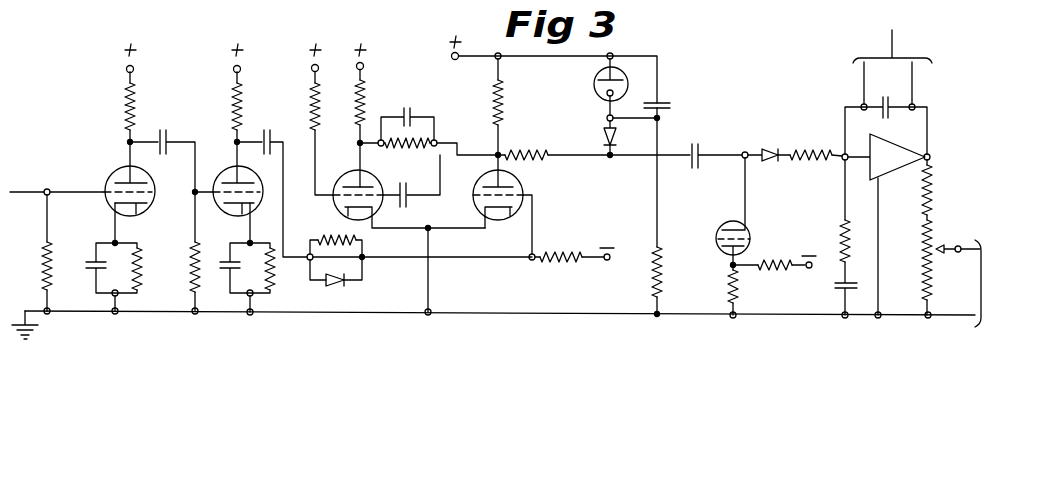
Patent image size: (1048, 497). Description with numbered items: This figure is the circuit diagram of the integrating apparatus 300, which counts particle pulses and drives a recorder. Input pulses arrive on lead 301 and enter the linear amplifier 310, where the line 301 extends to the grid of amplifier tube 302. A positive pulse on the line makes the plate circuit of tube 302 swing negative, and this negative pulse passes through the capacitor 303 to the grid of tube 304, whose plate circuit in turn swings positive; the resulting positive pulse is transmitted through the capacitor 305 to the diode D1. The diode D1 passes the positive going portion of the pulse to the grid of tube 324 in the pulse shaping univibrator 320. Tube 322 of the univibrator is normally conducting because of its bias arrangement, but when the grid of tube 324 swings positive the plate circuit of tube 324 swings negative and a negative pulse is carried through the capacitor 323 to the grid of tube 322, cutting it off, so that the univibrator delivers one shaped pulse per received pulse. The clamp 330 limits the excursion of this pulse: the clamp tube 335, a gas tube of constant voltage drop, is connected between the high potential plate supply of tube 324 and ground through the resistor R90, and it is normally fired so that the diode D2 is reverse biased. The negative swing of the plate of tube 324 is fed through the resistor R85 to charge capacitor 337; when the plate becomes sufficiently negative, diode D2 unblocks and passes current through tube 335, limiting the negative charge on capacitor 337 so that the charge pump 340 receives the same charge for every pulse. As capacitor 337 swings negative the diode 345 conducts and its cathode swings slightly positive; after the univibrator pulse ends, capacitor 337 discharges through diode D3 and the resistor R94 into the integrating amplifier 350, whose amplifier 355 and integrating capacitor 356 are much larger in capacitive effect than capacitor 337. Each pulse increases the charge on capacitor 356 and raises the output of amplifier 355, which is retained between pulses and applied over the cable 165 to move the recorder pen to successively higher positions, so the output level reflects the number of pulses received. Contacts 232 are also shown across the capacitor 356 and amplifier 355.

The integrating apparatus 300 is at (516, 218).
The linear amplifier 310 is at (157, 224).
The lead 301 is at (45, 194).
The amplifier tube 302 is at (136, 212).
The capacitor 303 is at (182, 128).
The tube 304 is at (221, 178).
The capacitor 305 is at (284, 126).
The pulse shaping univibrator 320 is at (452, 213).
The tube 322 is at (338, 209).
The capacitor 323 is at (418, 173).
The tube 324 is at (519, 189).
The diode D1 is at (338, 285).
The clamp 330 is at (599, 207).
The resistor R85 is at (548, 150).
The clamp tube 335 is at (595, 88).
The diode D2 is at (605, 133).
The capacitor 337 is at (710, 143).
The resistor R90 is at (648, 283).
The charge pump 340 is at (772, 264).
The diode D3 is at (774, 152).
The resistor R94 is at (825, 153).
The diode 345 is at (750, 238).
The integrating amplifier 350 is at (930, 206).
The integrating amplifier 355 is at (898, 148).
The integrating capacitor 356 is at (890, 98).
The reset switch contacts 232 is at (892, 42).
The cable 165 is at (1001, 281).